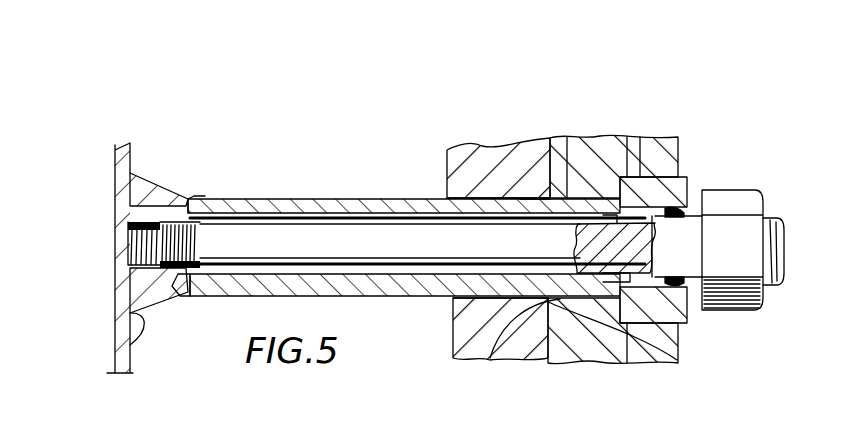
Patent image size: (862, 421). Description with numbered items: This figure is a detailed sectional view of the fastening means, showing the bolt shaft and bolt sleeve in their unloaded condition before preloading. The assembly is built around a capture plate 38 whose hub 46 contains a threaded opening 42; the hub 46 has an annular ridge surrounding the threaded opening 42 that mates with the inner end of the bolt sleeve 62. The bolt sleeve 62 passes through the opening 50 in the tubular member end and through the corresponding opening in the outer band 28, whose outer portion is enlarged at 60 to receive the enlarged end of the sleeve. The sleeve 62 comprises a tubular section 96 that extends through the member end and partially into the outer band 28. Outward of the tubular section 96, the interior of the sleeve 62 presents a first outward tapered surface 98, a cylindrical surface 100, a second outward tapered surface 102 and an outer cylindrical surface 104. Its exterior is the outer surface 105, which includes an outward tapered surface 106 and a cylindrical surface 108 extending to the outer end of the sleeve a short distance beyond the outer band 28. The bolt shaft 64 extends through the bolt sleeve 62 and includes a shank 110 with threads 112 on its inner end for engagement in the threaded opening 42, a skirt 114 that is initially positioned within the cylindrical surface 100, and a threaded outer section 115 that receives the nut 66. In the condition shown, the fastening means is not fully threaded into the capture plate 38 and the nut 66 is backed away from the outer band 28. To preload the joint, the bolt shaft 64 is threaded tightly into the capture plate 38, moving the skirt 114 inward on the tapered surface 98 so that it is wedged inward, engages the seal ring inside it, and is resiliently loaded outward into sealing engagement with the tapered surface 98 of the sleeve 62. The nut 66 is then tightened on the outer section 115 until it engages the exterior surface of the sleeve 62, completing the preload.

The outer band 28 is at (650, 207).
The capture plate 38 is at (118, 318).
The threaded opening 42 is at (128, 236).
The hub 46 is at (115, 348).
The opening 50 is at (447, 198).
The enlarged outer portion of opening 60 is at (567, 137).
The bolt sleeve 62 is at (327, 297).
The bolt shaft 64 is at (252, 204).
The nut 66 is at (730, 311).
The tubular section 96 is at (293, 198).
The first outward tapered surface 98 is at (548, 198).
The cylindrical surface 100 is at (490, 360).
The second outward tapered surface 102 is at (632, 177).
The outer cylindrical surface 104 is at (688, 210).
The outer surface 105 is at (273, 300).
The outward tapered surface 106 is at (567, 361).
The cylindrical surface 108 is at (680, 328).
The shank 110 is at (165, 272).
The threads 112 is at (145, 268).
The skirt 114 is at (643, 235).
The outer section 115 is at (774, 212).